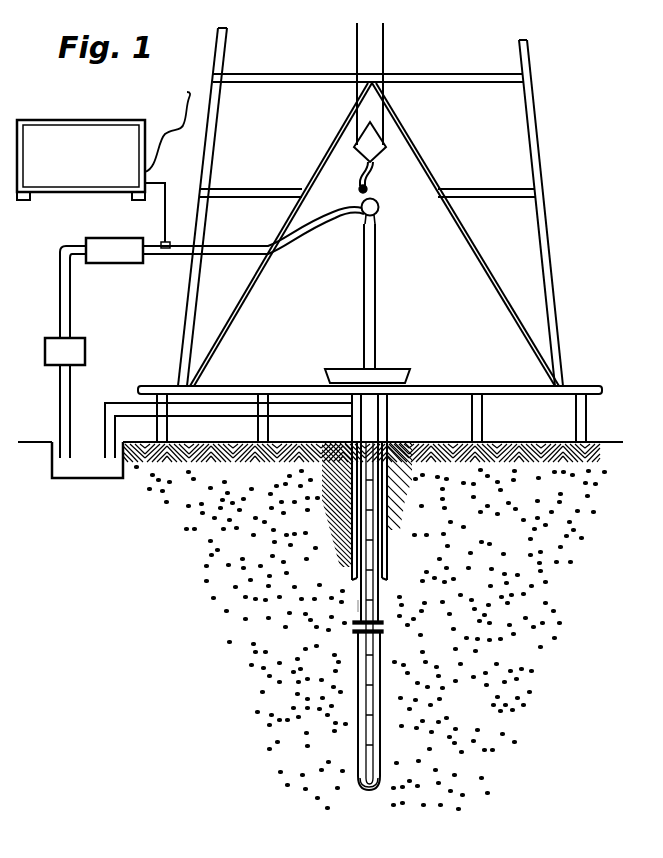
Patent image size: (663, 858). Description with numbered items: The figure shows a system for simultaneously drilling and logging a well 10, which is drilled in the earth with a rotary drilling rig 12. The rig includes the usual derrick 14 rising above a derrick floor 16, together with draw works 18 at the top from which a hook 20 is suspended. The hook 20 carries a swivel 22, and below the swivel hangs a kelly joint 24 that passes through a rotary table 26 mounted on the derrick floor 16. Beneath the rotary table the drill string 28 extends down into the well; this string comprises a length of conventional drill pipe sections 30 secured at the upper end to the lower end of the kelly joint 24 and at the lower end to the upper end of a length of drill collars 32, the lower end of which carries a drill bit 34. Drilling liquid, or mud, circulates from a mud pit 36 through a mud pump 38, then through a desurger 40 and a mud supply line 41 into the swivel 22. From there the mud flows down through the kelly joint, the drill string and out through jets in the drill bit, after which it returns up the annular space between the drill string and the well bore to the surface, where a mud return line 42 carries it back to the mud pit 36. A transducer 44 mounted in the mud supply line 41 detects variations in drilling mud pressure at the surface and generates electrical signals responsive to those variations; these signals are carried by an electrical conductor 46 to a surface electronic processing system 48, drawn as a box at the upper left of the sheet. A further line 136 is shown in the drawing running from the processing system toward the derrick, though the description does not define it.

The well 10 is at (356, 607).
The rotary drilling rig 12 is at (537, 109).
The derrick 14 is at (540, 157).
The derrick floor 16 is at (580, 387).
The draw works 18 is at (355, 52).
The hook 20 is at (380, 188).
The swivel 22 is at (362, 220).
The kelly joint 24 is at (377, 285).
The rotary table 26 is at (408, 370).
The drill string 28 is at (388, 593).
The drill pipe sections 30 is at (372, 609).
The drill collars 32 is at (386, 706).
The drill bit 34 is at (381, 783).
The mud pit 36 is at (86, 478).
The mud pump 38 is at (86, 345).
The desurger 40 is at (120, 238).
The mud supply line 41 is at (284, 252).
The mud return line 42 is at (296, 417).
The transducer 44 is at (170, 240).
The electrical conductor 46 is at (171, 200).
The surface electronic processing system 48 is at (84, 120).
The signal cable 136 is at (168, 130).